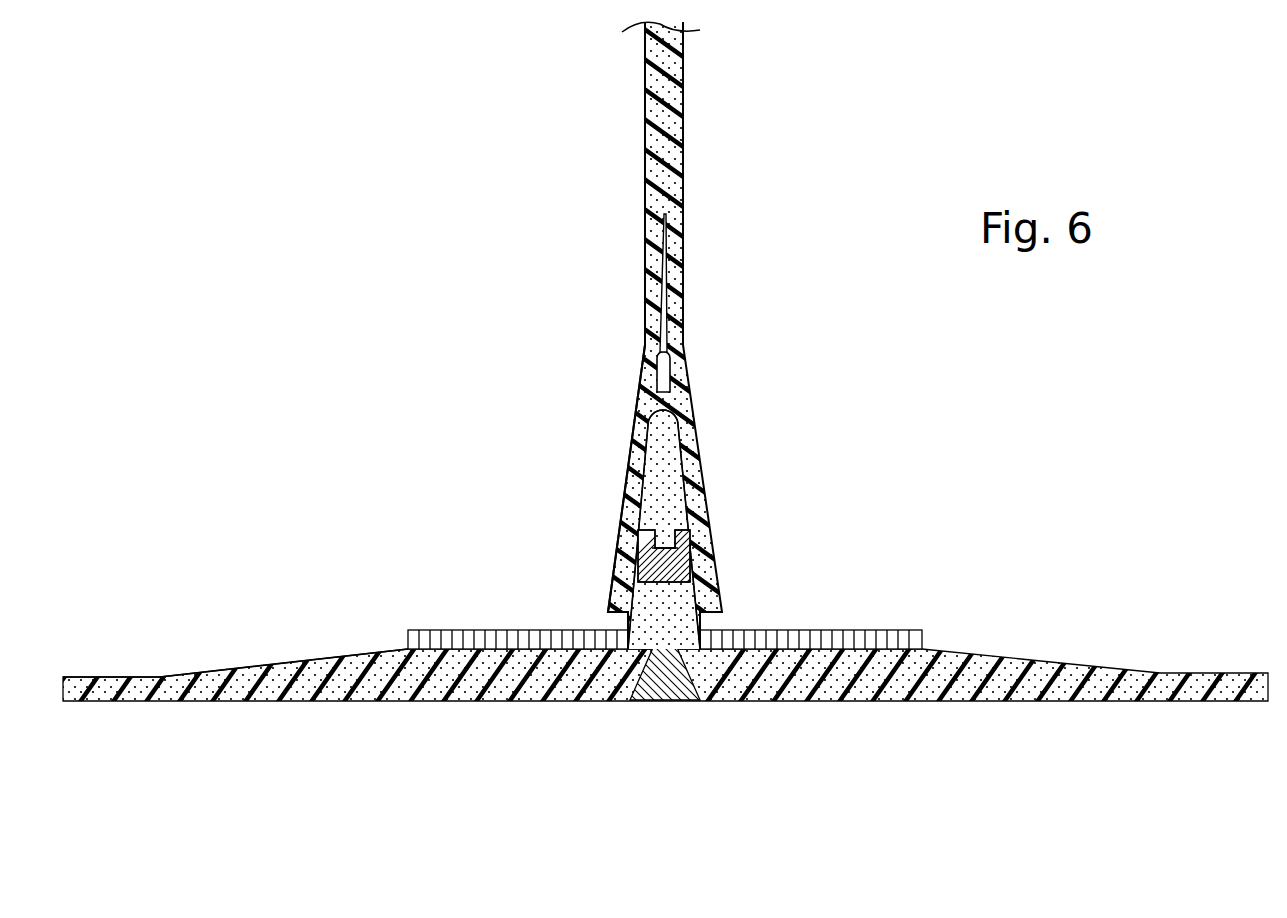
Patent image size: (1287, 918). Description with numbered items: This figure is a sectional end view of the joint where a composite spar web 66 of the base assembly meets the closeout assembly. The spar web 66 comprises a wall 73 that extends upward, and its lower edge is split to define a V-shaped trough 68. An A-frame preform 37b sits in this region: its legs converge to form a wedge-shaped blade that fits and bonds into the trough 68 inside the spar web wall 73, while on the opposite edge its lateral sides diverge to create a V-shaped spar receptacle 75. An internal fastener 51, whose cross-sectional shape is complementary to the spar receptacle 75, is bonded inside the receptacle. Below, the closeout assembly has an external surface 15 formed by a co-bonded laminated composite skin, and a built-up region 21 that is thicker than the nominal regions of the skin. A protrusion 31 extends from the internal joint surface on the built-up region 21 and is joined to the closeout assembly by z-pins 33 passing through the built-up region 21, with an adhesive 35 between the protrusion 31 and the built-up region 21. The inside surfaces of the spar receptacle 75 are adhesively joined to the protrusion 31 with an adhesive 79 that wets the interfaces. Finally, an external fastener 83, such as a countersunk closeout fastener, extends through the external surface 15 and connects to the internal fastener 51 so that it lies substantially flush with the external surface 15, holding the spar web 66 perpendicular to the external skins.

The external surface 15 is at (955, 712).
The built-up region 21 is at (335, 648).
The protrusion 31 is at (697, 612).
The z-pin 33 is at (458, 628).
The adhesive 35 is at (930, 640).
The preform 37b is at (645, 328).
The internal fastener 51 is at (708, 528).
The spar web 66 is at (615, 90).
The V-shaped trough 68 is at (650, 292).
The wall 73 is at (684, 185).
The spar receptacle 75 is at (664, 375).
The adhesive 79 is at (620, 515).
The external fastener 83 is at (642, 702).